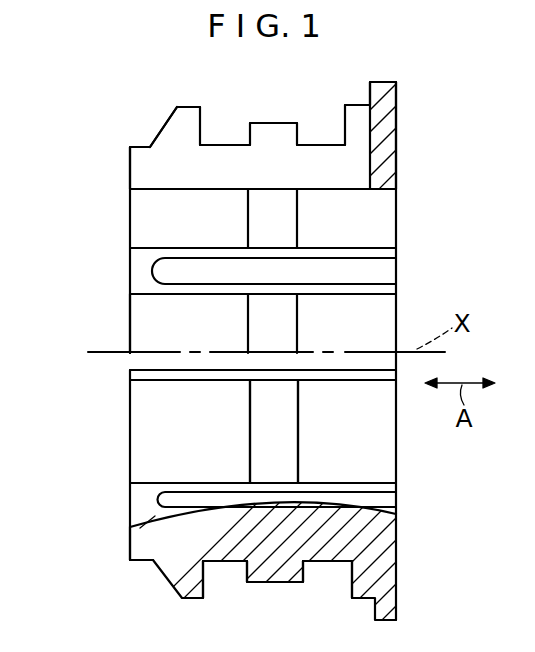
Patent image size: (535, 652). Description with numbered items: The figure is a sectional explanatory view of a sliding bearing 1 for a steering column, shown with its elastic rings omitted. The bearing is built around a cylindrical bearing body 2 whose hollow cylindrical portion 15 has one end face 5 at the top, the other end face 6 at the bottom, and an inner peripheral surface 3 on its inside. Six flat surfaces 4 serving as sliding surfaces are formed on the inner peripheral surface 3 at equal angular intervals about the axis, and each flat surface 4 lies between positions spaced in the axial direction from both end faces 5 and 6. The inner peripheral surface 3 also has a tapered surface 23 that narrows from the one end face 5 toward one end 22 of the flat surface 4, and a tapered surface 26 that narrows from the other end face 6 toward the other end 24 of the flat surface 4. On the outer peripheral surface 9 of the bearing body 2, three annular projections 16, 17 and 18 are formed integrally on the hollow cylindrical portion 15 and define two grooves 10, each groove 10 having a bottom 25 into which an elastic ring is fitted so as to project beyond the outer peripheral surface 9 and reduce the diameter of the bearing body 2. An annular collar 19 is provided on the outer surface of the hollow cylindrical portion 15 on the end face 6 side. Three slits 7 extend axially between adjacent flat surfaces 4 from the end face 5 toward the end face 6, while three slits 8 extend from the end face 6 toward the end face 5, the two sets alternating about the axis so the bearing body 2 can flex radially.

The sliding bearing 1 is at (98, 132).
The bearing body 2 is at (153, 563).
The inner peripheral surface 3 is at (130, 326).
The flat surface 4 is at (298, 218).
The one end face 5 is at (130, 436).
The other end face 6 is at (397, 223).
The slit 7 is at (148, 168).
The slit 8 is at (385, 268).
The outer peripheral surface 9 is at (166, 121).
The groove 10 is at (232, 568).
The hollow cylindrical portion 15 is at (158, 529).
The annular projection 16 is at (172, 128).
The annular projection 17 is at (272, 124).
The annular projection 18 is at (350, 104).
The annular collar 19 is at (384, 82).
The one end of flat surface 22 is at (250, 409).
The tapered surface 23 is at (147, 522).
The other end of flat surface 24 is at (300, 405).
The bottom of groove 25 is at (226, 143).
The tapered surface 26 is at (383, 512).